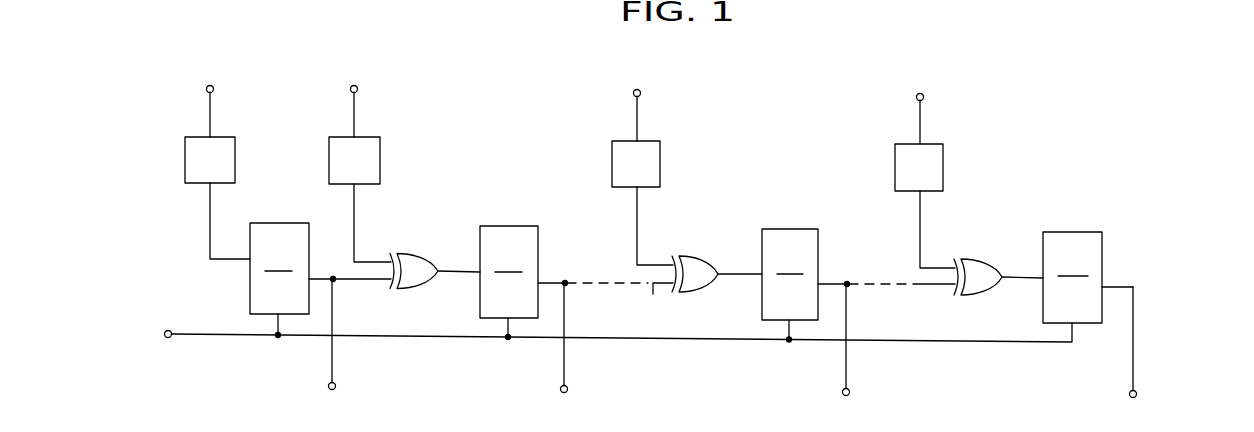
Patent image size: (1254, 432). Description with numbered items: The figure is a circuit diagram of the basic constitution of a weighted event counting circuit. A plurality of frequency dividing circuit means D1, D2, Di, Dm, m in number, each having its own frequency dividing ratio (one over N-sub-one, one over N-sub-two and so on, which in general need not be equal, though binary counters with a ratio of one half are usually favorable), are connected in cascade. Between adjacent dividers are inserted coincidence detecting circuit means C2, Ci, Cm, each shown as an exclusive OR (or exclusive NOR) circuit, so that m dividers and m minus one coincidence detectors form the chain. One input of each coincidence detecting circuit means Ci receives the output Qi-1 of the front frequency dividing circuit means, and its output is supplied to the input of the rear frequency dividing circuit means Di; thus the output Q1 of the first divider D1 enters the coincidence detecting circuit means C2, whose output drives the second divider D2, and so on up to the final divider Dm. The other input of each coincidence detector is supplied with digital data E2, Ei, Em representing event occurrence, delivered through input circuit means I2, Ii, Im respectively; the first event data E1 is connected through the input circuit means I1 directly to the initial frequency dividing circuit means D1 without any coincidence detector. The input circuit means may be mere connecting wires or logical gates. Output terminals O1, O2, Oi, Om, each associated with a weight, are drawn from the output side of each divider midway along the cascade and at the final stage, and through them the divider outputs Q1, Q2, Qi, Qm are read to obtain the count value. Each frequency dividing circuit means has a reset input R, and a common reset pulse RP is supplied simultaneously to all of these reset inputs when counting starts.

The digital data representing event occurrence E1 is at (214, 84).
The digital data representing event occurrence E2 is at (357, 84).
The digital data representing event occurrence Ei is at (637, 89).
The digital data representing event occurrence Em is at (920, 93).
The input circuit means I1 is at (224, 137).
The input circuit means I2 is at (369, 137).
The input circuit means Ii is at (650, 141).
The input circuit means Im is at (930, 144).
The frequency dividing circuit means D1 is at (285, 223).
The frequency dividing circuit means D2 is at (508, 226).
The frequency dividing circuit means Di is at (789, 229).
The frequency dividing circuit means Dm is at (1080, 232).
The coincidence detecting circuit means C2 is at (408, 290).
The coincidence detecting circuit means Ci is at (692, 293).
The coincidence detecting circuit means Cm is at (978, 295).
The output of frequency dividing circuit means Q1 is at (333, 283).
The output of frequency dividing circuit means Q2 is at (558, 280).
The output of front frequency dividing circuit means Qi-1 is at (652, 303).
The output of frequency dividing circuit means Qi is at (836, 282).
The output of frequency dividing circuit means Qm is at (1127, 285).
The output terminal O1 is at (336, 388).
The output terminal O2 is at (560, 390).
The output terminal Oi is at (850, 394).
The output terminal Om is at (1137, 397).
The common reset pulse RP is at (600, 335).